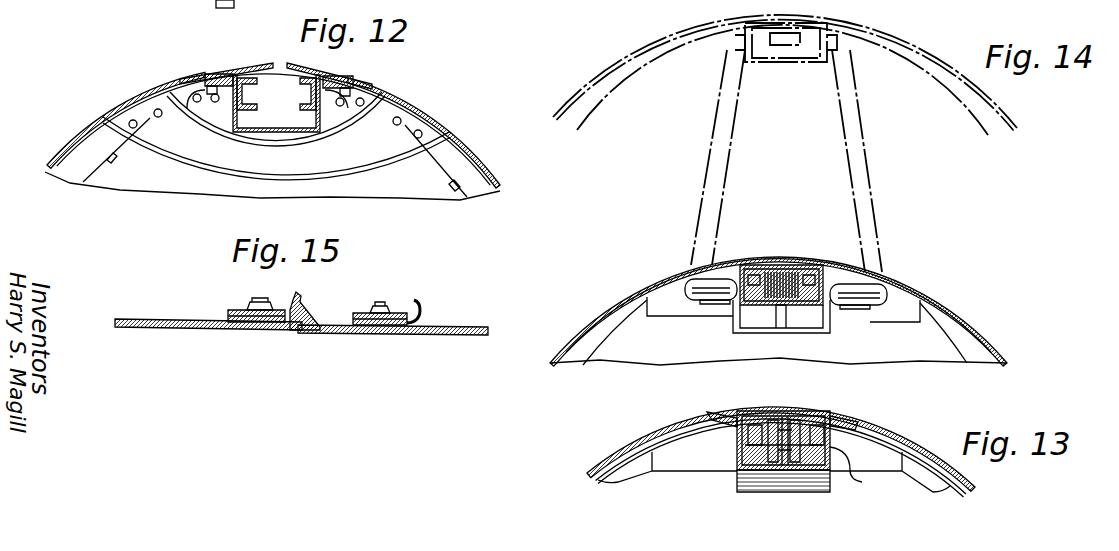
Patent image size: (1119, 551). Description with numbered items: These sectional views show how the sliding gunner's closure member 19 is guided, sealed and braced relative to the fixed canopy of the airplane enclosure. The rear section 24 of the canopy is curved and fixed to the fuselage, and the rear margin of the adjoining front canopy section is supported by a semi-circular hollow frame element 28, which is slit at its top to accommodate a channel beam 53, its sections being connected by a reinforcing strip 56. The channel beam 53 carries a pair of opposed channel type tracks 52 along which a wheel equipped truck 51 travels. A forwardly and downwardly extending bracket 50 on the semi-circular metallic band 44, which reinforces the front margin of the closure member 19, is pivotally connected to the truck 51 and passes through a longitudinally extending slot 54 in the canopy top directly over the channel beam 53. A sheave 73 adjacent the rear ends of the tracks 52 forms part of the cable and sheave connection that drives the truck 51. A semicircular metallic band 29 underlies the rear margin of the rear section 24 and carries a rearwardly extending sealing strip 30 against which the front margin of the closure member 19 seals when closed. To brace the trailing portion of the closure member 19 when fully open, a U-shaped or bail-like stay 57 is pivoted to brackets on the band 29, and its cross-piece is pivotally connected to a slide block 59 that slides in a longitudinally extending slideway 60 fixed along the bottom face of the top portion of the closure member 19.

In FIG. 15, the gunner's hatch type closure member 19 is at (470, 325).
In FIG. 12, the rear section of the canopy 24 is at (428, 116).
In FIG. 15, the rear section of the canopy 24 is at (152, 319).
In FIG. 14, the rear section of the canopy 24 is at (1012, 118).
In FIG. 13, the rear section of the canopy 24 is at (915, 443).
In FIG. 12, the semi-circular hollow frame element 28 is at (452, 150).
In FIG. 15, the semicircular metallic band 29 is at (228, 316).
In FIG. 15, the sealing strip 30 is at (304, 303).
In FIG. 15, the semi-circular metallic band 44 is at (421, 306).
In FIG. 13, the bracket 50 is at (785, 417).
In FIG. 13, the wheel equipped truck 51 is at (805, 425).
In FIG. 12, the channel type tracks 52 is at (298, 104).
In FIG. 13, the channel type tracks 52 is at (812, 432).
In FIG. 12, the channel beam 53 is at (258, 133).
In FIG. 13, the channel beam 53 is at (855, 470).
In FIG. 12, the longitudinally extending slot 54 is at (278, 64).
In FIG. 12, the reinforcing strip 56 is at (361, 156).
In FIG. 14, the U-shaped or bail-like stay 57 is at (732, 115).
In FIG. 14, the slide block 59 is at (740, 312).
In FIG. 14, the slideway 60 is at (820, 328).
In FIG. 13, the sheave 73 is at (800, 476).